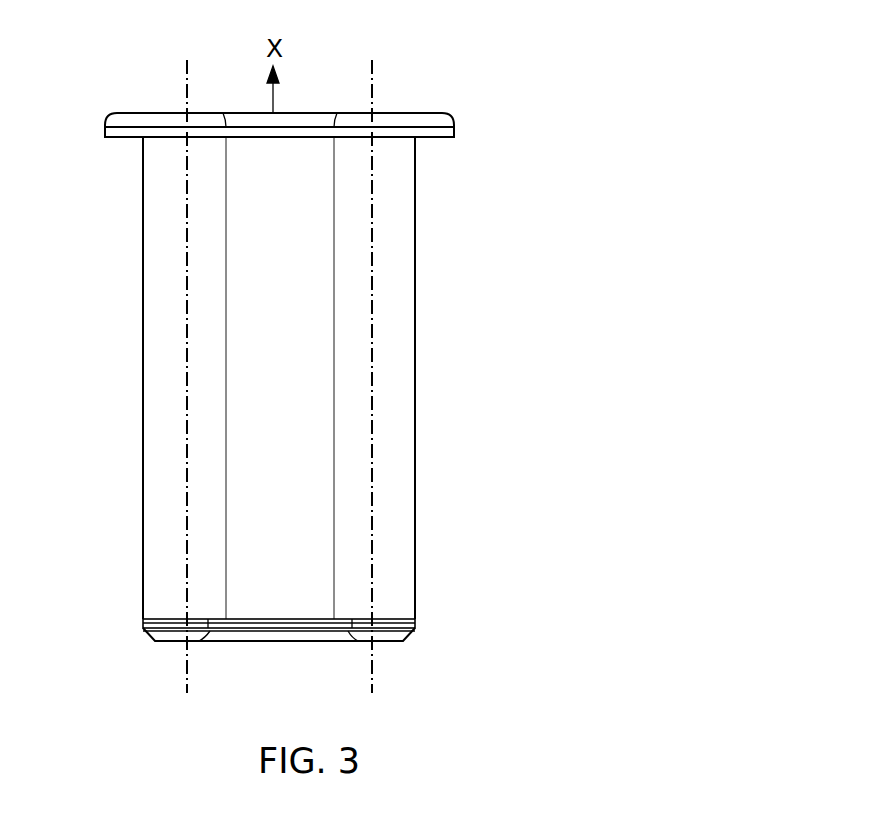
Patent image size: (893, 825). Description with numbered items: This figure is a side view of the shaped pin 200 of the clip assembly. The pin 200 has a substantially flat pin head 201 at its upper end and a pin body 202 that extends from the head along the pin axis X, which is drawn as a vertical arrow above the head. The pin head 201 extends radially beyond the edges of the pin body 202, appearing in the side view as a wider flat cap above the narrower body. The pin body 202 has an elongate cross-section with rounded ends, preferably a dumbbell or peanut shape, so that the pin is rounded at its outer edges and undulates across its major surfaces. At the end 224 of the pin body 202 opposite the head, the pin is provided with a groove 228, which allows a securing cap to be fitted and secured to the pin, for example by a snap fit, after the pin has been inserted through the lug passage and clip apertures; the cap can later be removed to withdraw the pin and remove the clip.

The shaped pin 200 is at (446, 210).
The pin head 201 is at (151, 120).
The pin body 202 is at (416, 383).
The end of the pin body 224 is at (156, 642).
The groove 228 is at (416, 624).